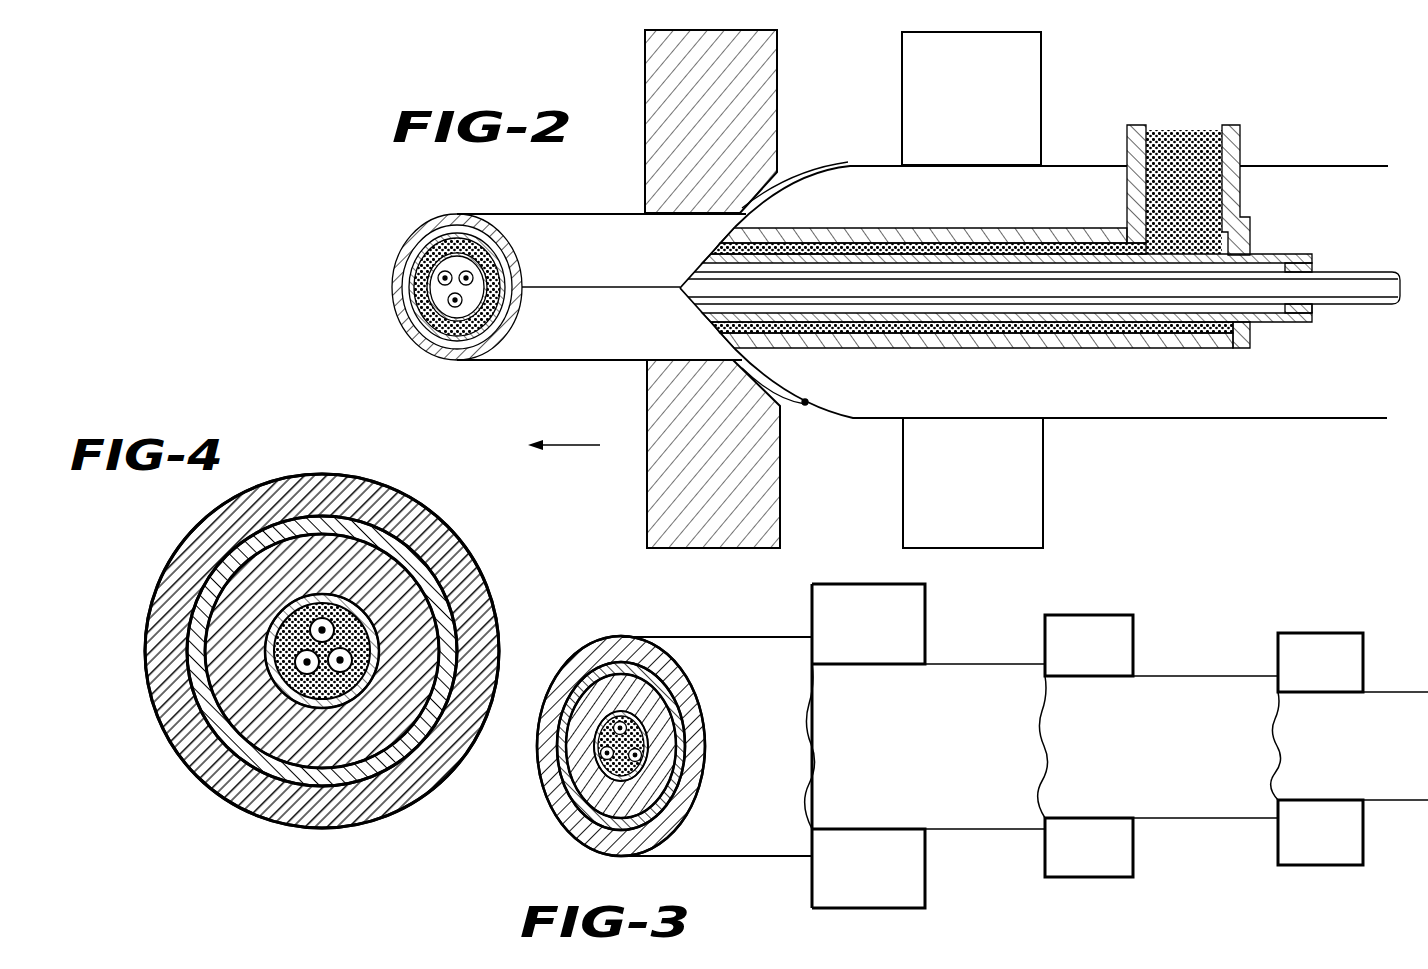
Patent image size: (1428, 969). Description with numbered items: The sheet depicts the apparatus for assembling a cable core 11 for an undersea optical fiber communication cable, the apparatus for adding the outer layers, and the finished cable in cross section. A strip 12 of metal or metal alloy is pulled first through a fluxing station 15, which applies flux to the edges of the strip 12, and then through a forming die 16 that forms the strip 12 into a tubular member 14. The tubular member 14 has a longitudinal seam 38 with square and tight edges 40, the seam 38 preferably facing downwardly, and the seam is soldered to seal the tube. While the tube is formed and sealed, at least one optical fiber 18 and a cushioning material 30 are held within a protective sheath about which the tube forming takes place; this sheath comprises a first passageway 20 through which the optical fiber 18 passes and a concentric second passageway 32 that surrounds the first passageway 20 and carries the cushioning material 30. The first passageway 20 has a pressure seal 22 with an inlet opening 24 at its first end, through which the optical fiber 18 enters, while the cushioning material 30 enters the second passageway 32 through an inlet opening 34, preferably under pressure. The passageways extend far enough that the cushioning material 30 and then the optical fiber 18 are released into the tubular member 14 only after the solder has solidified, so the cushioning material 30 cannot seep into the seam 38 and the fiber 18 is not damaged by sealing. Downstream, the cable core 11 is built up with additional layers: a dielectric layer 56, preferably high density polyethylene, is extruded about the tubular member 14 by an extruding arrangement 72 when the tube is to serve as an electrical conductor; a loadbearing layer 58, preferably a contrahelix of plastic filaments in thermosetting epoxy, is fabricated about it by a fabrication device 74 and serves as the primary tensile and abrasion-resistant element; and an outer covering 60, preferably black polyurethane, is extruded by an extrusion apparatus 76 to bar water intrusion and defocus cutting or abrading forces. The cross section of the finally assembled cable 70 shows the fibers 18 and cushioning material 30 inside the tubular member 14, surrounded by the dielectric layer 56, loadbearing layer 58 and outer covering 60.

In FIG. 2, the cable core 11 is at (410, 225).
In FIG. 2, the strip 12 is at (1313, 184).
In FIG. 2, the tubular member 14 is at (583, 214).
In FIG. 4, the tubular member 14 is at (268, 657).
In FIG. 3, the tubular member 14 is at (608, 778).
In FIG. 2, the fluxing station 15 is at (1042, 78).
In FIG. 2, the forming die 16 is at (778, 63).
In FIG. 2, the optical fiber 18 is at (1368, 287).
In FIG. 4, the optical fiber 18 is at (400, 552).
In FIG. 3, the optical fiber 18 is at (612, 752).
In FIG. 2, the first chamber or passageway 20 is at (1278, 256).
In FIG. 2, the pressure seal 22 is at (1312, 268).
In FIG. 2, the inlet opening 24 is at (1318, 308).
In FIG. 2, the cushioning material 30 is at (1188, 180).
In FIG. 4, the cushioning material 30 is at (288, 686).
In FIG. 3, the cushioning material 30 is at (600, 790).
In FIG. 2, the second chamber or passageway 32 is at (1127, 140).
In FIG. 2, the inlet opening 34 is at (1189, 130).
In FIG. 2, the longitudinal seam 38 is at (615, 287).
In FIG. 2, the square and tight edges 40 is at (805, 405).
In FIG. 4, the dielectric layer 56 is at (225, 626).
In FIG. 3, the dielectric layer 56 is at (668, 678).
In FIG. 4, the loadbearing layer 58 is at (215, 590).
In FIG. 3, the loadbearing layer 58 is at (640, 657).
In FIG. 4, the outer covering 60 is at (190, 550).
In FIG. 3, the outer covering 60 is at (610, 645).
In FIG. 4, the finally assembled cable 70 is at (302, 476).
In FIG. 3, the finally assembled cable 70 is at (584, 635).
In FIG. 3, the extruding arrangement 72 is at (1335, 633).
In FIG. 3, the fabrication device 74 is at (1103, 659).
In FIG. 3, the extrusion apparatus 76 is at (880, 636).